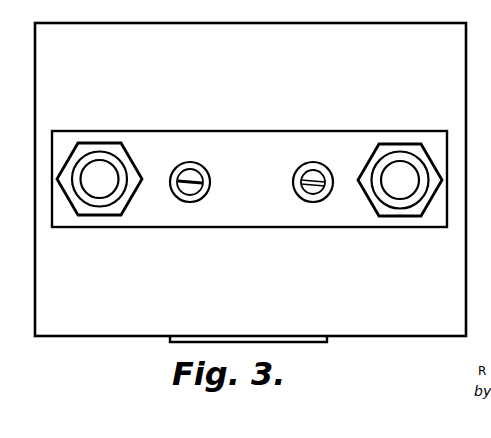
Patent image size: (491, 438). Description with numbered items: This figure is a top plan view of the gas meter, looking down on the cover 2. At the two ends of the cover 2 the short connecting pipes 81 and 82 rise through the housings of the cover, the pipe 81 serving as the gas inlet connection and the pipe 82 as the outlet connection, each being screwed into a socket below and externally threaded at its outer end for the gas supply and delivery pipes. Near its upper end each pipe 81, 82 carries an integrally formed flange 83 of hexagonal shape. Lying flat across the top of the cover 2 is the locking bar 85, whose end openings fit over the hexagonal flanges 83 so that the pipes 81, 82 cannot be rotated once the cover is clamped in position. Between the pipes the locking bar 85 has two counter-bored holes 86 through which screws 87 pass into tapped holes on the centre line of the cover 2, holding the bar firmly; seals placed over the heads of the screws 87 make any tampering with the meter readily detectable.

The cover 2 is at (250, 182).
The connecting pipe 81 is at (100, 157).
The connecting pipe 82 is at (400, 160).
The flange 83 is at (103, 208).
The locking bar 85 is at (251, 177).
The counter-bored holes 86 is at (307, 165).
The screws 87 is at (302, 190).